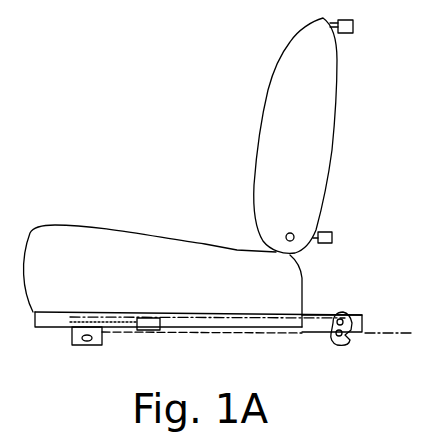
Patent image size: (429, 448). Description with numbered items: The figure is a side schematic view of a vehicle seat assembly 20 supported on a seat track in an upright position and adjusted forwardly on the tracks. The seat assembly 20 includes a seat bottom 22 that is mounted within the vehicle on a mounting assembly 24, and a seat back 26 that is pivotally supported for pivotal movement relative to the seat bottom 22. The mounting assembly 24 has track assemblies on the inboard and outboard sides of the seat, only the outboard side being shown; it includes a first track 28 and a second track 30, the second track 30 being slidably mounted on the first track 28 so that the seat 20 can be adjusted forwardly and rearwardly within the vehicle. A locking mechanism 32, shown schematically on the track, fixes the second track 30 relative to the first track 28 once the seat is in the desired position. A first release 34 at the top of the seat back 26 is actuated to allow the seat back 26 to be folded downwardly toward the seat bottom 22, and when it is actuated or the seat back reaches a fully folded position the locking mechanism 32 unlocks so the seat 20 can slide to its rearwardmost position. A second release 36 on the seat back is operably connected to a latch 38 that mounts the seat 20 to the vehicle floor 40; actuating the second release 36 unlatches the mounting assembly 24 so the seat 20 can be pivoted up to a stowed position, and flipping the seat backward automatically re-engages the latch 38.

The vehicle seat assembly 20 is at (187, 178).
The seat bottom 22 is at (68, 237).
The mounting assembly 24 is at (50, 343).
The seat back 26 is at (270, 127).
The first track 28 is at (236, 328).
The second track 30 is at (297, 324).
The locking mechanism 32 is at (150, 330).
The first release 34 is at (347, 33).
The second release 36 is at (332, 241).
The latch 38 is at (354, 343).
The vehicle floor 40 is at (388, 332).